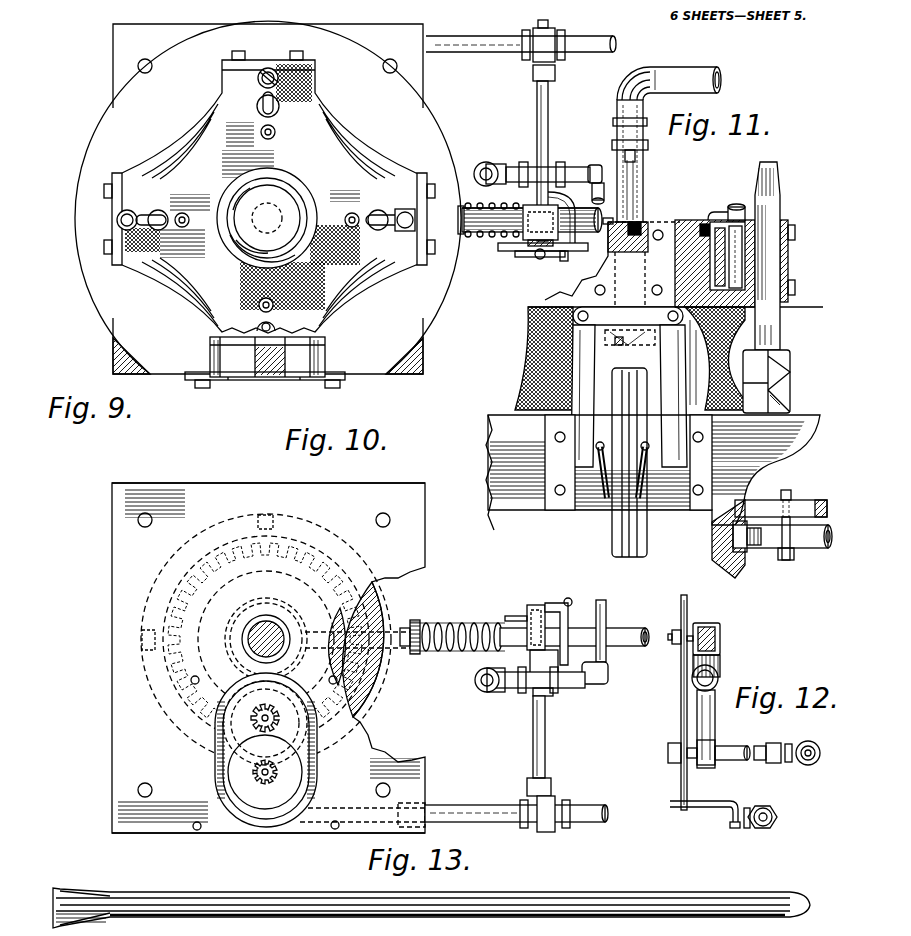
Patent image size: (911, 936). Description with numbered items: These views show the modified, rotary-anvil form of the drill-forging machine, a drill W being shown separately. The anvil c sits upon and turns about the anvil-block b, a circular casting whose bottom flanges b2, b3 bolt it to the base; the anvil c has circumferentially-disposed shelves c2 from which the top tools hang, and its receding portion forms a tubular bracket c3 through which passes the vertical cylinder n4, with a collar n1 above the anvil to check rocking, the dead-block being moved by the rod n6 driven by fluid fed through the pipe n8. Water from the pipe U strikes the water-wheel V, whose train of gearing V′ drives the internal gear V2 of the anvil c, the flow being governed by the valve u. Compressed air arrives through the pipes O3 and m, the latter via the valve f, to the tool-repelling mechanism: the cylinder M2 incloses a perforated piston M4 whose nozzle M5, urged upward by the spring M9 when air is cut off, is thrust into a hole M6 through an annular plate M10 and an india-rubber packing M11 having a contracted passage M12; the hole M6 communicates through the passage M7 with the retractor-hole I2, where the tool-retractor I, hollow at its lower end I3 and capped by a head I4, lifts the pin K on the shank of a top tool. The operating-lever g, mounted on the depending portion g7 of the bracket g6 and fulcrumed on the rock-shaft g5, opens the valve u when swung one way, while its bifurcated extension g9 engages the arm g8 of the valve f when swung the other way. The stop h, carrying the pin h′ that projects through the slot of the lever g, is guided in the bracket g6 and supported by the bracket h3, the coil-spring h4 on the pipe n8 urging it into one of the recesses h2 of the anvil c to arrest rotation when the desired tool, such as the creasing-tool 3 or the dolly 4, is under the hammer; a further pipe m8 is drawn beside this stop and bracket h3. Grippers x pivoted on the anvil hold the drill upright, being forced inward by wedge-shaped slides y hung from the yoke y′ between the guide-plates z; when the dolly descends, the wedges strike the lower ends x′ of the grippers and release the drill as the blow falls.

In FIG. 9, the anvil c is at (95, 311).
In FIG. 11, the anvil c is at (488, 428).
In FIG. 9, the shelves c2 is at (225, 83).
In FIG. 11, the tubular bracket c3 is at (530, 340).
In FIG. 9, the pin K is at (258, 100).
In FIG. 11, the pin K is at (755, 175).
In FIG. 9, the contracted passage M12 is at (262, 136).
In FIG. 11, the contracted passage M12 is at (720, 226).
In FIG. 9, the collar n1 is at (242, 262).
In FIG. 9, the cylinder n4 is at (282, 200).
In FIG. 9, the rod n6 is at (272, 217).
In FIG. 9, the head I4 is at (164, 212).
In FIG. 11, the head I4 is at (737, 207).
In FIG. 11, the creasing-tool 3 is at (793, 400).
In FIG. 9, the dolly 4 is at (278, 321).
In FIG. 11, the dolly 4 is at (640, 344).
In FIG. 9, the wedge-shaped slides y is at (210, 355).
In FIG. 11, the wedge-shaped slides y is at (573, 388).
In FIG. 9, the yoke y′ is at (302, 378).
In FIG. 11, the yoke y′ is at (614, 345).
In FIG. 9, the guide-plates z is at (345, 378).
In FIG. 11, the guide-plates z is at (548, 460).
In FIG. 11, the valve u is at (551, 36).
In FIG. 13, the valve u is at (556, 833).
In FIG. 12, the valve u is at (818, 745).
In FIG. 11, the pipe U is at (478, 52).
In FIG. 13, the pipe U is at (452, 824).
In FIG. 11, the rock-shaft g5 is at (537, 98).
In FIG. 13, the rock-shaft g5 is at (546, 740).
In FIG. 12, the rock-shaft g5 is at (733, 762).
In FIG. 11, the pipe m is at (596, 198).
In FIG. 13, the pipe m is at (603, 600).
In FIG. 12, the pipe m is at (780, 814).
In FIG. 11, the pipe O3 is at (480, 164).
In FIG. 13, the pipe O3 is at (478, 692).
In FIG. 11, the coil-spring h4 is at (465, 210).
In FIG. 13, the coil-spring h4 is at (385, 630).
In FIG. 11, the stop h is at (480, 226).
In FIG. 12, the stop h is at (722, 636).
In FIG. 12, the pin h′ is at (672, 648).
In FIG. 11, the bracket g6 is at (534, 222).
In FIG. 11, the operating-lever g is at (540, 260).
In FIG. 13, the operating-lever g is at (527, 612).
In FIG. 12, the operating-lever g is at (688, 604).
In FIG. 11, the supplemental lever g9 is at (564, 258).
In FIG. 13, the supplemental lever g9 is at (571, 600).
In FIG. 11, the arm g8 is at (576, 232).
In FIG. 13, the arm g8 is at (565, 600).
In FIG. 12, the arm g8 is at (686, 812).
In FIG. 12, the depending portion g7 is at (716, 726).
In FIG. 11, the cylinder M2 is at (620, 120).
In FIG. 11, the piston M4 is at (616, 146).
In FIG. 11, the spring M9 is at (640, 162).
In FIG. 11, the nozzle M5 is at (640, 200).
In FIG. 11, the annular plate M10 is at (636, 224).
In FIG. 11, the india-rubber packing M11 is at (704, 226).
In FIG. 11, the hole M6 is at (626, 252).
In FIG. 11, the passage M7 is at (790, 300).
In FIG. 11, the tool-retractor I is at (752, 236).
In FIG. 11, the hollow lower end I3 is at (740, 258).
In FIG. 11, the retractor-hole I2 is at (745, 282).
In FIG. 11, the grippers x is at (648, 402).
In FIG. 11, the lower ends of grippers x′ is at (600, 440).
In FIG. 11, the anvil-block b is at (490, 535).
In FIG. 13, the anvil-block b is at (268, 658).
In FIG. 13, the flange b2 is at (196, 483).
In FIG. 13, the flange b3 is at (340, 835).
In FIG. 11, the recesses h2 is at (752, 500).
In FIG. 13, the recesses h2 is at (275, 518).
In FIG. 11, the bracket h3 is at (783, 556).
In FIG. 13, the bracket h3 is at (414, 656).
In FIG. 11, the pipe m8 is at (805, 550).
In FIG. 13, the internal gear V2 is at (366, 606).
In FIG. 13, the water-wheel V is at (318, 775).
In FIG. 13, the train of gearing V′ is at (305, 738).
In FIG. 13, the pipe n8 is at (625, 647).
In FIG. 12, the pipe n8 is at (718, 678).
In FIG. 13, the valve f is at (530, 696).
In FIG. 12, the valve f is at (745, 828).